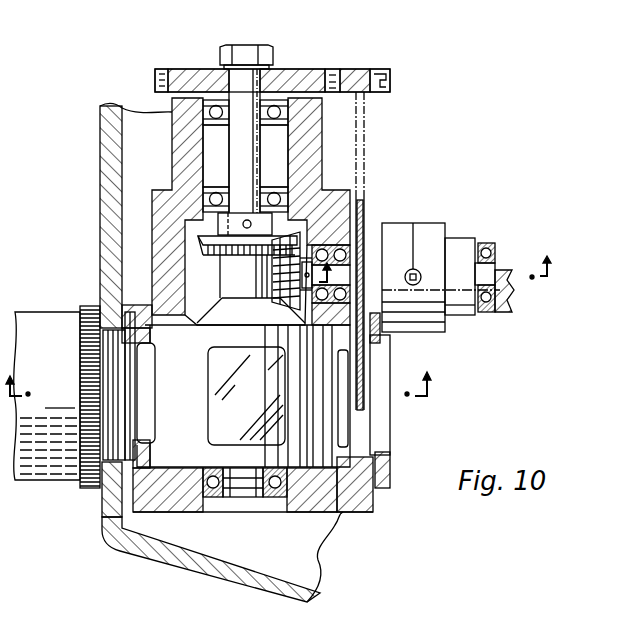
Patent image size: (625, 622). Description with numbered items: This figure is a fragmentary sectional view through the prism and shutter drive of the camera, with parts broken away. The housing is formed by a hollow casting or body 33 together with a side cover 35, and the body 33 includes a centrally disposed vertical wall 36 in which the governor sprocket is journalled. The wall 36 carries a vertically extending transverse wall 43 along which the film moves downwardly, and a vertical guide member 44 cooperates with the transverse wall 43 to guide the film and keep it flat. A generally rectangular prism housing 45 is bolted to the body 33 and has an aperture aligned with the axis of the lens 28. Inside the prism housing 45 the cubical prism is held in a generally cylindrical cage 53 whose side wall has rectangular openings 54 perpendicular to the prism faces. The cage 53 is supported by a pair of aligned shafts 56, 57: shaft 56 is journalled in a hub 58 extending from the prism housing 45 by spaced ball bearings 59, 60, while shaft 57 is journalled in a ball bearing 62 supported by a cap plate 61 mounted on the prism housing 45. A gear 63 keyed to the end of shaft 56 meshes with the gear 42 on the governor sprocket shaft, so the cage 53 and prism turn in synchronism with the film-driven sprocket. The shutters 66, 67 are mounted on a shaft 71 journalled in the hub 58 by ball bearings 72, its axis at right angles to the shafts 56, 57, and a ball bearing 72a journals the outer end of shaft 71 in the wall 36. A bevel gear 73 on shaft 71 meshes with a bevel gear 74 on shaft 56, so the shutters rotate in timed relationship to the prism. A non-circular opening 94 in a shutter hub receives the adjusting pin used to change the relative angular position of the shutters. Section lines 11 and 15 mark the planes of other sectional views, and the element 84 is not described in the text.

The section line 11- 11 is at (447, 271).
The section line 15- 15 is at (234, 379).
The lens 28 is at (47, 321).
The body 33 is at (98, 502).
The side cover 35 is at (126, 556).
The vertical wall 36 is at (514, 303).
The gear 42 is at (356, 71).
The transverse wall 43 is at (391, 471).
The vertical guide member 44 is at (372, 511).
The prism housing 45 is at (145, 457).
The cage 53 is at (243, 396).
The rectangular openings 54 is at (208, 402).
The shaft 56 is at (240, 70).
The shaft 57 is at (255, 498).
The hub 58 is at (185, 158).
The ball bearing 59 is at (262, 168).
The ball bearing 60 is at (262, 137).
The cap plate 61 is at (174, 484).
The ball bearing 62 is at (218, 498).
The gear 63 is at (305, 70).
The shutter 66 is at (361, 152).
The shutter 67 is at (359, 183).
The shaft 71 is at (350, 266).
The ball bearings 72 is at (342, 249).
The ball bearing 72a is at (497, 251).
The bevel gear 73 is at (283, 306).
The bevel gear 74 is at (206, 248).
The hub 84 is at (456, 243).
The opening 94 is at (413, 269).